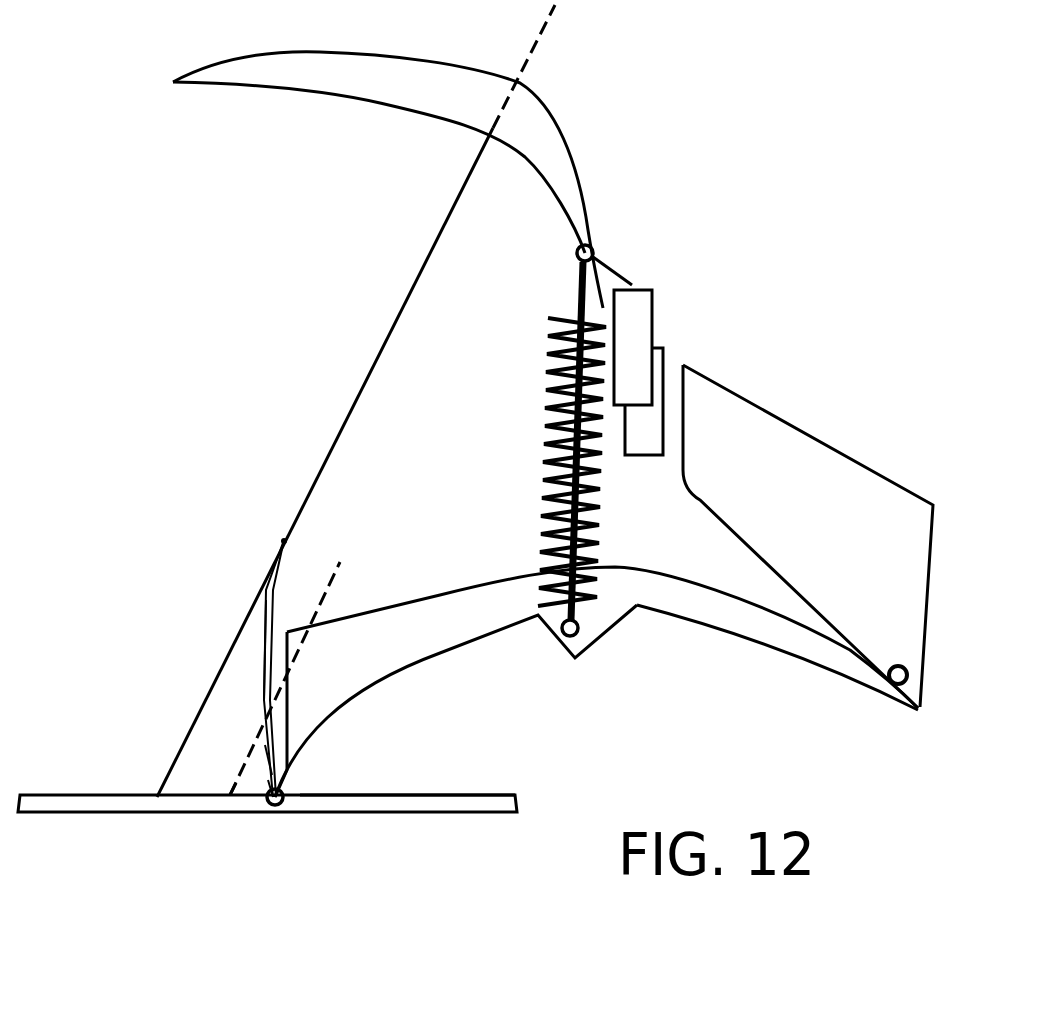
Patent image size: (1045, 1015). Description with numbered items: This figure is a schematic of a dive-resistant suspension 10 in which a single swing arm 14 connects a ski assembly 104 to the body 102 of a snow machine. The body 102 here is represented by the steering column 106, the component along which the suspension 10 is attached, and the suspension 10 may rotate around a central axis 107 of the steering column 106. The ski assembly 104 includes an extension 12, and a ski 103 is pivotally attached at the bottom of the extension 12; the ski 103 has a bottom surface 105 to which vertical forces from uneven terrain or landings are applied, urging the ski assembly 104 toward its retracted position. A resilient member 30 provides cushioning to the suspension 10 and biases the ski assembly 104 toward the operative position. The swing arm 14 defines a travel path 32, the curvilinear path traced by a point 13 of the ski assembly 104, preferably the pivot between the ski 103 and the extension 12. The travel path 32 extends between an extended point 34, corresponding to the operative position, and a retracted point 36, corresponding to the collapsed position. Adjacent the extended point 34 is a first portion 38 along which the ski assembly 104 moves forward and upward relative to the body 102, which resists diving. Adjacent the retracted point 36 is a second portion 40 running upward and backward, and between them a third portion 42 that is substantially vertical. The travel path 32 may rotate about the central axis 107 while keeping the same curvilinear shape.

The suspension 10 is at (524, 401).
The extension 12 is at (358, 665).
The point 13 is at (280, 810).
The swing arm 14 is at (675, 598).
The resilient member 30 is at (545, 518).
The travel path 32 is at (263, 665).
The extended point 34 is at (230, 793).
The retracted point 36 is at (280, 540).
The first portion 38 is at (267, 792).
The second portion 40 is at (270, 608).
The third portion 42 is at (268, 758).
The body 102 is at (583, 212).
The ski 103 is at (427, 800).
The ski assembly 104 is at (300, 728).
The bottom surface 105 is at (140, 813).
The steering column 106 is at (427, 250).
The central axis 107 is at (260, 592).